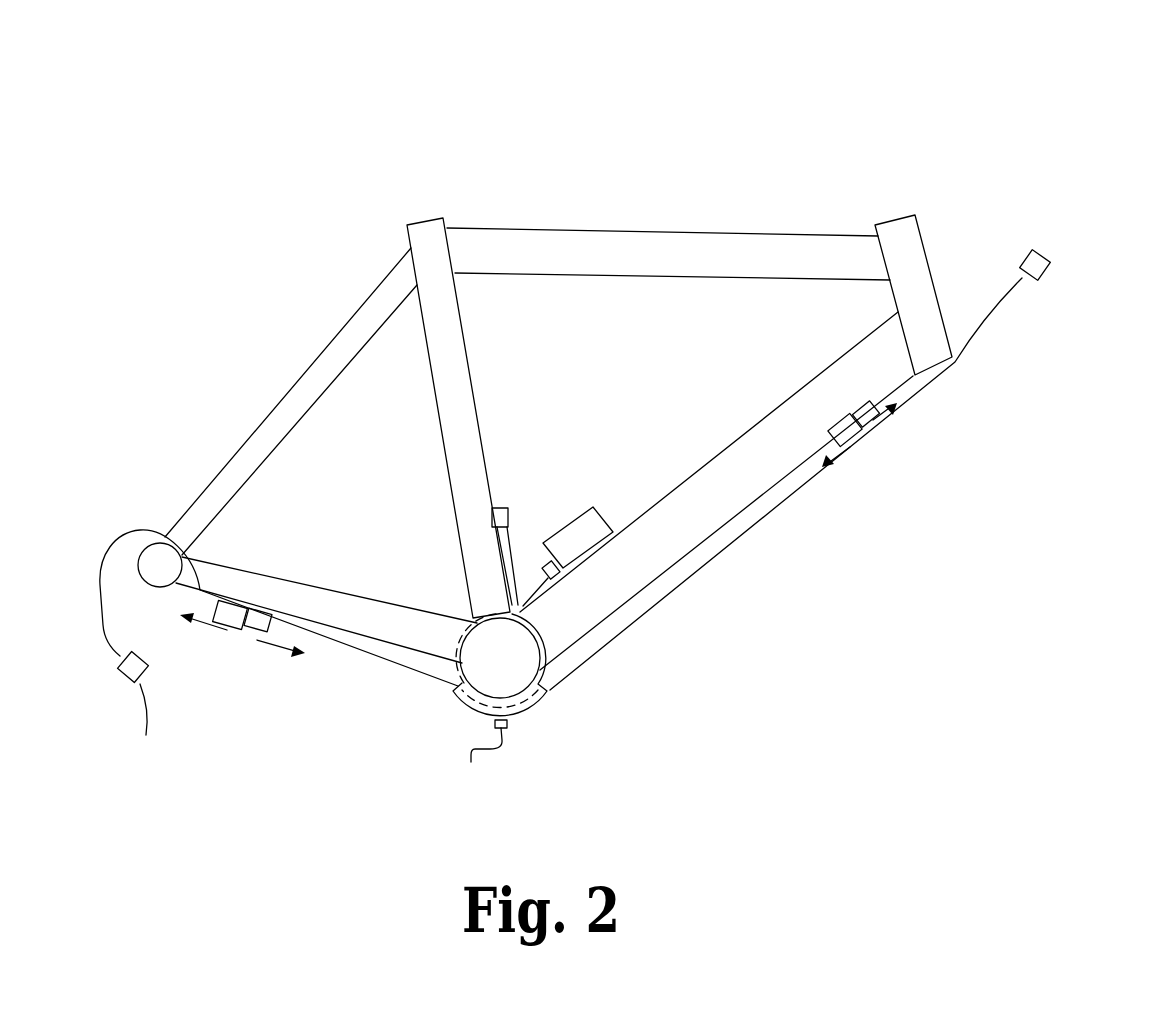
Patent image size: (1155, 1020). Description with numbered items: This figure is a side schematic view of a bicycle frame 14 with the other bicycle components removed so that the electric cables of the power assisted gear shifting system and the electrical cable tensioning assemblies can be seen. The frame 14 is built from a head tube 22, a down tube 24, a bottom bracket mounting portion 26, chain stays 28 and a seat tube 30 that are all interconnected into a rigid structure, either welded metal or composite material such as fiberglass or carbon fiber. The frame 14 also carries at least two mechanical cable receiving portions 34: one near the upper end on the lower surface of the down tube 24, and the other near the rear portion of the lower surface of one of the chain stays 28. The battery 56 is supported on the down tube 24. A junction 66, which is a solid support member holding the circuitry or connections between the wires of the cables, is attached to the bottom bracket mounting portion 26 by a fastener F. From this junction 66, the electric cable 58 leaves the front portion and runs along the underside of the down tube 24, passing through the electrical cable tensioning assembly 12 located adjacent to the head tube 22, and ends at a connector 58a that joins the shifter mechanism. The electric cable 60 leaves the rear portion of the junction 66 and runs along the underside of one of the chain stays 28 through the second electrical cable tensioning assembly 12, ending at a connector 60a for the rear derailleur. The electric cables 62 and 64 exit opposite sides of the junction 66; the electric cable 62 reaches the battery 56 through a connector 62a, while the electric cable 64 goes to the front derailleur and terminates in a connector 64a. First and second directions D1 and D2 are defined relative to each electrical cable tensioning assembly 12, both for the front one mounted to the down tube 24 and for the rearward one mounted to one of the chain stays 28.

The frame 14 is at (559, 401).
The head tube 22 is at (913, 265).
The down tube 24 is at (740, 452).
The bottom bracket mounting portion 26 is at (515, 664).
The chain stays 28 is at (298, 600).
The seat tube 30 is at (443, 320).
The electrical cable tensioning assembly 12 is at (236, 622).
The mechanical cable receiving portion 34 is at (255, 612).
The battery 56 is at (583, 522).
The electric cable 58 is at (785, 490).
The connector 58a is at (1050, 258).
The electric cable 60 is at (364, 658).
The connector 60a is at (144, 712).
The electric cable 62 is at (548, 590).
The connector 62a is at (556, 578).
The electric cable 64 is at (513, 553).
The connector 64a is at (500, 506).
The junction 66 is at (520, 718).
The fastener F is at (482, 762).
The first direction D1 is at (564, 560).
The second direction D2 is at (546, 529).